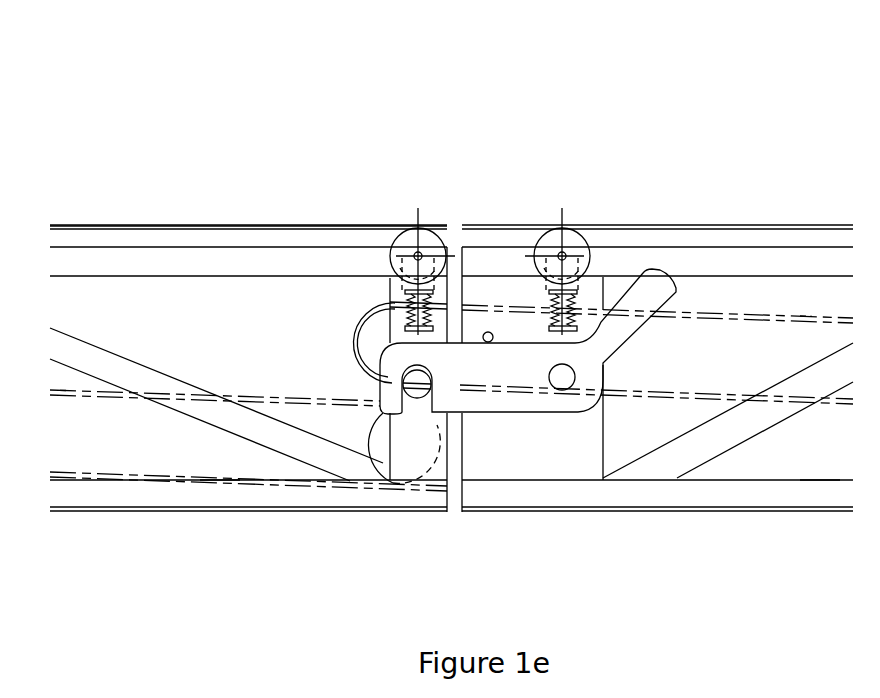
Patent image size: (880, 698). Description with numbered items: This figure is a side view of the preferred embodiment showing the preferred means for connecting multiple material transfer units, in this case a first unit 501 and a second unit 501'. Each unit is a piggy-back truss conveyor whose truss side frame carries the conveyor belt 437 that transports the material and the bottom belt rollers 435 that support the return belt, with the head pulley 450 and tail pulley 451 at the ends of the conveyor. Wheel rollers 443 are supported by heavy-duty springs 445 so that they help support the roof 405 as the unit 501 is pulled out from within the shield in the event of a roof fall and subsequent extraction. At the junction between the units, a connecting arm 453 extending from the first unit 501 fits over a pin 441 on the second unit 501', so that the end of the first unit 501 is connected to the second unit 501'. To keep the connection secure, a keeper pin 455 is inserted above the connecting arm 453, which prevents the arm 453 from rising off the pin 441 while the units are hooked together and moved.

The material transfer unit 501 is at (621, 267).
The second unit 501' is at (239, 261).
The roof 405 is at (143, 225).
The bottom belt rollers 435 is at (222, 484).
The conveyor belt 437 is at (120, 398).
The pin 441 is at (458, 413).
The wheel rollers 443 is at (545, 233).
The heavy-duty springs 445 is at (392, 304).
The head pulley 450 is at (388, 333).
The tail pulley 451 is at (407, 462).
The connecting arm 453 is at (488, 397).
The keeper pin 455 is at (490, 342).